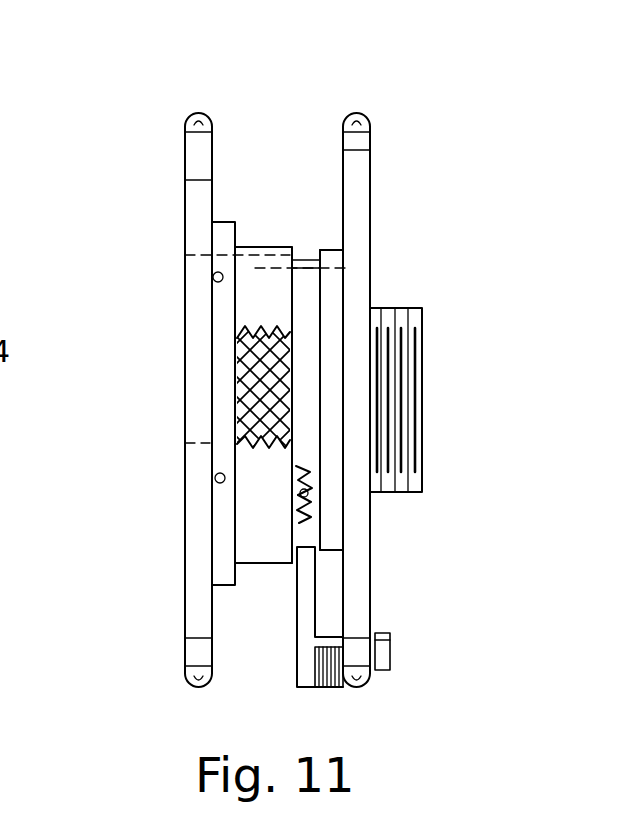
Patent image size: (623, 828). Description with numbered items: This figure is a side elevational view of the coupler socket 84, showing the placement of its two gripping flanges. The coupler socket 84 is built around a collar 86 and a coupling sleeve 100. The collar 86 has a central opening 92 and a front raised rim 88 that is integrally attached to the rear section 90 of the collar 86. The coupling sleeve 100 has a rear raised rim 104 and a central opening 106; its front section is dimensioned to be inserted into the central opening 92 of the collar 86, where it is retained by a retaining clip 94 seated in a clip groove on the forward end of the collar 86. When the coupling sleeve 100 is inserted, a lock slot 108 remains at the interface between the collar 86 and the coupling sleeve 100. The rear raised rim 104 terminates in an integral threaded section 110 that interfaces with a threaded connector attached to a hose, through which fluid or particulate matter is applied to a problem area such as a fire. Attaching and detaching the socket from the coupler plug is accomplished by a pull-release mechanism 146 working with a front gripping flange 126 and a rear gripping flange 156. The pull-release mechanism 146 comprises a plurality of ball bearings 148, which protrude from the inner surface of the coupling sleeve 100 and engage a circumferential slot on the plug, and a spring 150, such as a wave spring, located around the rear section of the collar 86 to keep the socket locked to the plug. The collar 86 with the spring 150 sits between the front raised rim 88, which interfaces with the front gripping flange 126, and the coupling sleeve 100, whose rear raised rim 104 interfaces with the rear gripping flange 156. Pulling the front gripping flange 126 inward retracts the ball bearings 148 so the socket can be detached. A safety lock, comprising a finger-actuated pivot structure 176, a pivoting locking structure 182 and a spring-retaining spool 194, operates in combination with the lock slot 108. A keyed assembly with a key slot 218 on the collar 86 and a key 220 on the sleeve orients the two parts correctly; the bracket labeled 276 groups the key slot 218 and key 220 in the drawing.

The coupler socket 84 is at (297, 135).
The collar 86 is at (282, 235).
The front raised rim 88 is at (220, 222).
The rear section 90 is at (257, 563).
The central opening 92 is at (282, 235).
The retaining clip 94 is at (207, 443).
The coupling sleeve 100 is at (307, 310).
The rear raised rim 104 is at (333, 307).
The central opening 106 is at (265, 248).
The lock slot 108 is at (300, 262).
The threaded section 110 is at (420, 358).
The front gripping flange 126 is at (198, 575).
The pull-release mechanism 146 is at (218, 270).
The ball bearings 148 is at (213, 480).
The spring 150 is at (235, 391).
The rear gripping flange 156 is at (362, 143).
The finger-actuated pivot structure 176 is at (385, 648).
The pivoting locking structure 182 is at (303, 595).
The spring-retaining spool 194 is at (340, 687).
The key slot 218 is at (315, 470).
The key 220 is at (303, 497).
The spring 276 is at (451, 459).